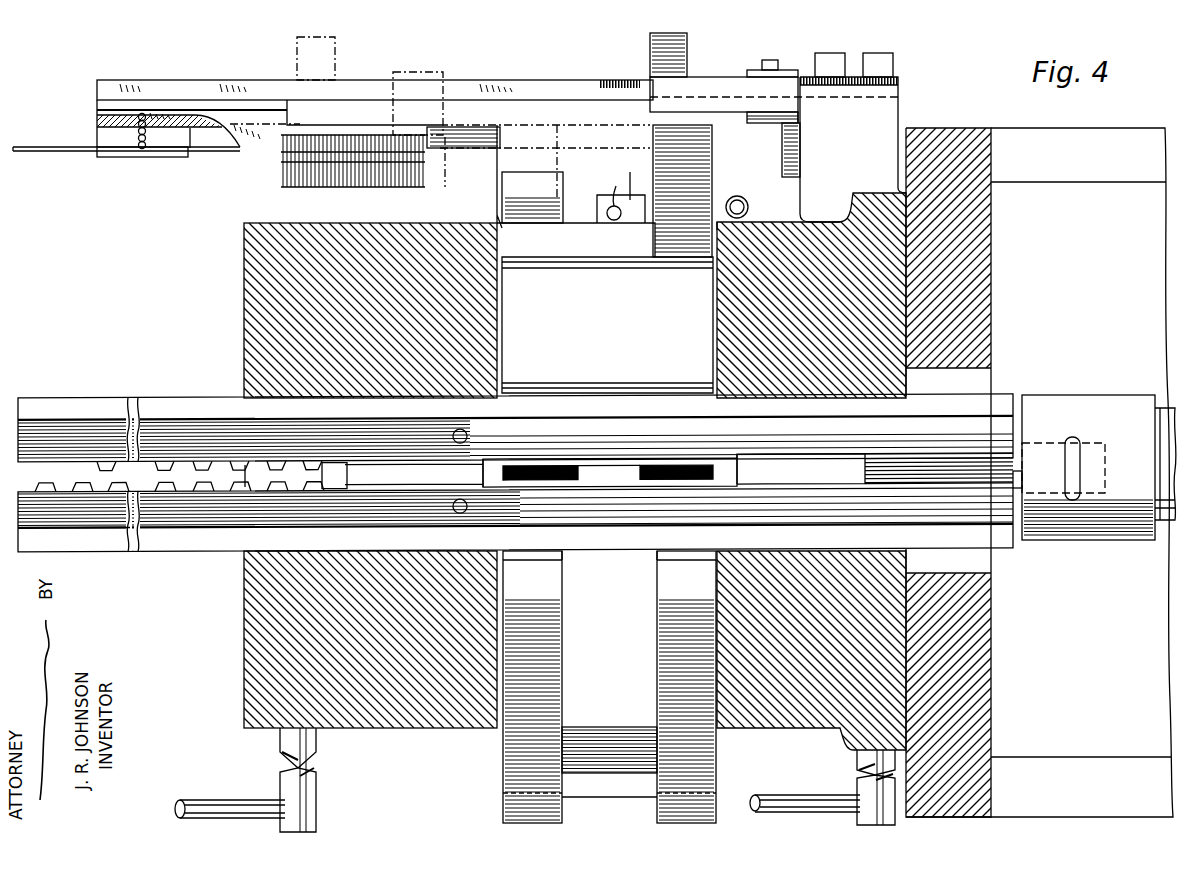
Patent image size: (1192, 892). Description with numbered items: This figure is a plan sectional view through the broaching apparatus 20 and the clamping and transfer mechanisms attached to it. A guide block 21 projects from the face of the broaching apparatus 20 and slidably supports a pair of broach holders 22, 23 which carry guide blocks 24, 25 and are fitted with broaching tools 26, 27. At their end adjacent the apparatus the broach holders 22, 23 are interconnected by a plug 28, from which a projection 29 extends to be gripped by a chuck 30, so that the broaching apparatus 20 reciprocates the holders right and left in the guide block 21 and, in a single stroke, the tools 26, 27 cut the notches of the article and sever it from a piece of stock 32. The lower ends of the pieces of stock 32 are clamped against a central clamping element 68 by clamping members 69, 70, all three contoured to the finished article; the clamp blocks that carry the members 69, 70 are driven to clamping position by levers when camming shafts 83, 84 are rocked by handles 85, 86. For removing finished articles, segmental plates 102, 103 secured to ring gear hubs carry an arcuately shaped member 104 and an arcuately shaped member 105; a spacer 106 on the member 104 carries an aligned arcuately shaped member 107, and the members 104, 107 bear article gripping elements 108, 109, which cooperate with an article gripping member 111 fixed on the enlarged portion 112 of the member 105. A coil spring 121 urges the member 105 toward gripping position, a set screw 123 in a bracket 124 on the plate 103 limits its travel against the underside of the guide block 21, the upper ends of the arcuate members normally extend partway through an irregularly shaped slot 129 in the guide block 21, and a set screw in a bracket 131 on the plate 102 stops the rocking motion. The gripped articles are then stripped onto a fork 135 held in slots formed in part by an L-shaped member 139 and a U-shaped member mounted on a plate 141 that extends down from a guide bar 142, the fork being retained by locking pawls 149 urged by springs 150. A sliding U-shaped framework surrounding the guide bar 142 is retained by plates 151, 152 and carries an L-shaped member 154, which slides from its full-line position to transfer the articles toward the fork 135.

The broaching apparatus 20 is at (1036, 122).
The guide block 21 is at (893, 265).
The broach holder 22 is at (150, 554).
The broach holder 23 is at (148, 400).
The guide block 24 is at (580, 491).
The guide block 25 is at (605, 466).
The broaching tool 26 is at (205, 470).
The broaching tool 27 is at (203, 490).
The plug 28 is at (975, 468).
The projection 29 is at (1020, 455).
The chuck 30 is at (1092, 410).
The piece of stock 32 is at (555, 468).
The central clamping element 68 is at (612, 474).
The clamping member 69 is at (724, 474).
The clamping member 70 is at (480, 474).
The camming shaft 83 is at (862, 780).
The camming shaft 84 is at (318, 758).
The handle 85 is at (773, 797).
The handle 86 is at (232, 803).
The segmental plate 102 is at (572, 220).
The segmental plate 103 is at (647, 220).
The arcuately shaped member 104 is at (502, 189).
The arcuately shaped member 105 is at (712, 138).
The spacer 106 is at (632, 788).
The arcuately shaped member 107 is at (700, 743).
The article gripping element 108 is at (560, 560).
The article gripping element 109 is at (660, 560).
The article gripping member 111 is at (677, 385).
The enlarged portion 112 is at (543, 360).
The coil spring 121 is at (758, 200).
The set screw 123 is at (616, 186).
The bracket 124 is at (630, 178).
The slot 129 is at (500, 216).
The bracket 131 is at (296, 182).
The fork 135 is at (50, 155).
The L-shaped member 139 is at (165, 158).
The plate 141 is at (242, 103).
The guide bar 142 is at (541, 88).
The locking pawl 149 is at (140, 150).
The spring 150 is at (148, 112).
The plate 151 is at (346, 48).
The plate 152 is at (781, 70).
The L-shaped member 154 is at (800, 152).